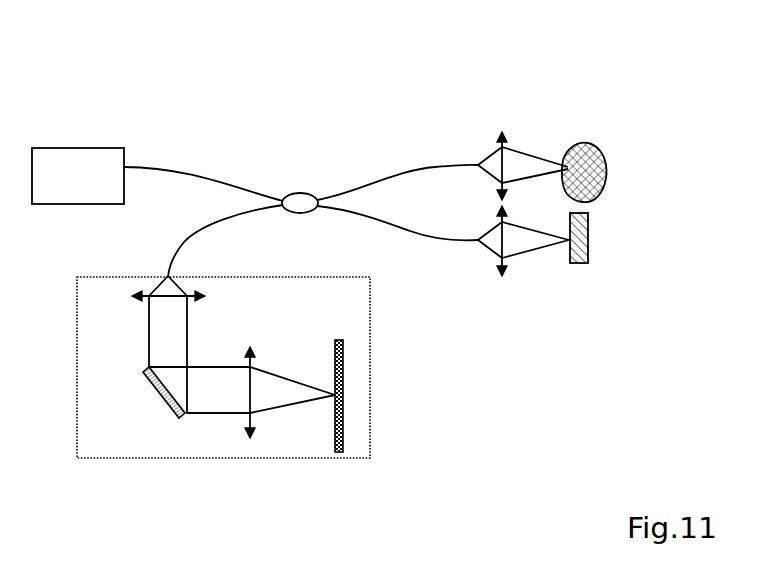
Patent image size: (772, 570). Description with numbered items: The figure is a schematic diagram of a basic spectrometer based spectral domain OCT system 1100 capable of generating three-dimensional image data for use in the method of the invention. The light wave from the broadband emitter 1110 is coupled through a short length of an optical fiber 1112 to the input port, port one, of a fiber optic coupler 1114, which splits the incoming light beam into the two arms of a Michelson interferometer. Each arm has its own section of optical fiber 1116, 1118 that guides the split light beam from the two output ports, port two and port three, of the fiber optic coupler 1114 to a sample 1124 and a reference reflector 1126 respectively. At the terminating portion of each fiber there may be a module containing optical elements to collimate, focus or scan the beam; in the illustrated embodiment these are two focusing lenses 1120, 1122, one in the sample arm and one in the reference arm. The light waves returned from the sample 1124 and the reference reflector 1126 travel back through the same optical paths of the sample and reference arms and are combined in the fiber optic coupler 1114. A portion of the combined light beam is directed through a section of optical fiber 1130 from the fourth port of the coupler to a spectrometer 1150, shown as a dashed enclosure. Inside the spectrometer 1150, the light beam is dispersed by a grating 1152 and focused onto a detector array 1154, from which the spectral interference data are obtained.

The spectrometer based spectral domain OCT system 1100 is at (126, 36).
The broadband emitter 1110 is at (90, 147).
The optical fiber 1112 is at (187, 169).
The fiber optic coupler 1114 is at (297, 193).
The optical fiber 1116 is at (425, 168).
The optical fiber 1118 is at (407, 230).
The focusing lens 1120 is at (507, 142).
The focusing lens 1122 is at (497, 268).
The sample 1124 is at (592, 152).
The reference reflector 1126 is at (588, 220).
The optical fiber 1130 is at (185, 240).
The spectrometer 1150 is at (223, 396).
The grating 1152 is at (160, 395).
The detector array 1154 is at (335, 337).